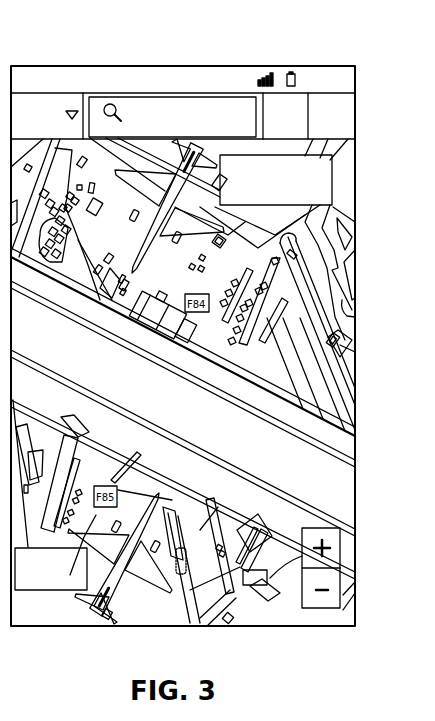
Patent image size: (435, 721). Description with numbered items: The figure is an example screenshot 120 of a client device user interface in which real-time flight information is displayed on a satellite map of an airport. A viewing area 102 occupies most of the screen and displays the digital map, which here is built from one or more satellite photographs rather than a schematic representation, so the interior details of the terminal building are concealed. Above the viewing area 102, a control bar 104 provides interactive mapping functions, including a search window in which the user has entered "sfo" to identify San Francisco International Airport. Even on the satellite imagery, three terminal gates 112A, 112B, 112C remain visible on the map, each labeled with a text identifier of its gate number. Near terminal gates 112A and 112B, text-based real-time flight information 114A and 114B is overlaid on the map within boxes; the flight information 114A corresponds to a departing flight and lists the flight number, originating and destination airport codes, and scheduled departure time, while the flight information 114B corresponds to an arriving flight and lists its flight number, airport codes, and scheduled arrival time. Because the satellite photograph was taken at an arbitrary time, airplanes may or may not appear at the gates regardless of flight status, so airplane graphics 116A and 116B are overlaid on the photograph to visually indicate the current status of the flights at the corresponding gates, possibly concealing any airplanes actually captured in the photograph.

The viewing area 102 is at (356, 192).
The control bar 104 is at (356, 116).
The terminal gate 112A is at (200, 313).
The terminal gate 112B is at (99, 486).
The terminal gate 112C is at (243, 568).
The real-time flight information 114A is at (340, 169).
The real-time flight information 114B is at (57, 601).
The airplane graphic 116A is at (140, 238).
The airplane graphic 116B is at (158, 491).
The screenshot 120 is at (160, 38).